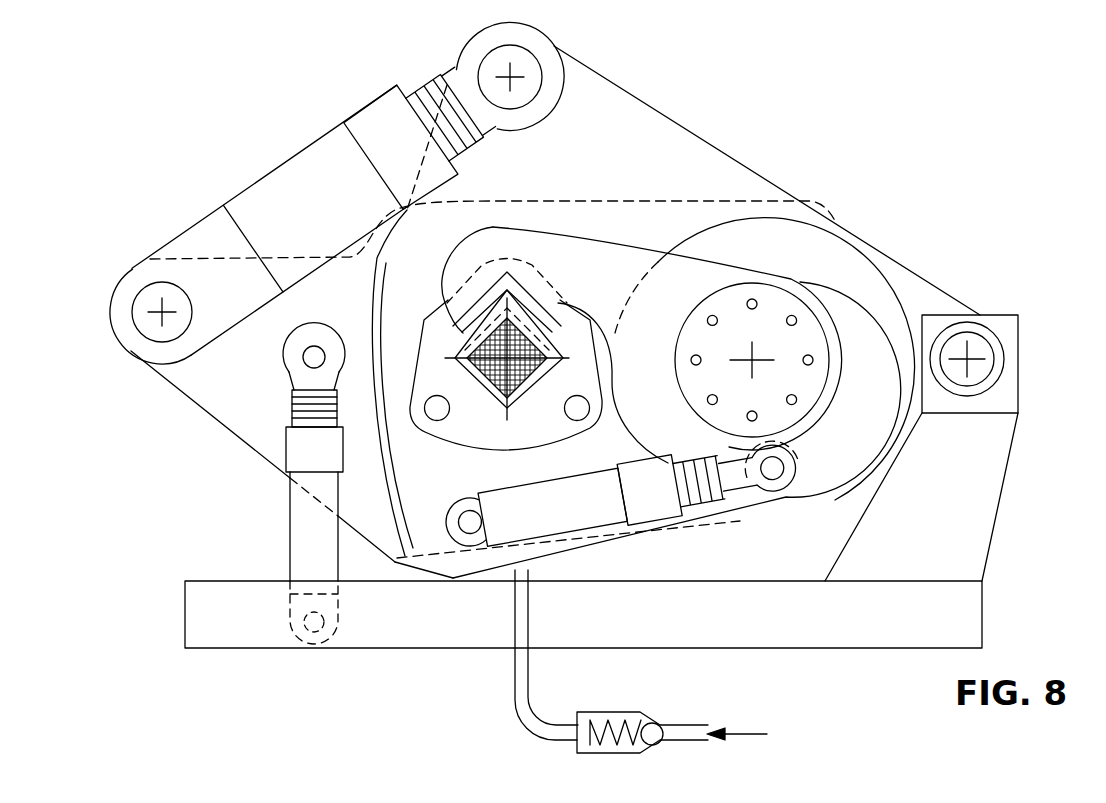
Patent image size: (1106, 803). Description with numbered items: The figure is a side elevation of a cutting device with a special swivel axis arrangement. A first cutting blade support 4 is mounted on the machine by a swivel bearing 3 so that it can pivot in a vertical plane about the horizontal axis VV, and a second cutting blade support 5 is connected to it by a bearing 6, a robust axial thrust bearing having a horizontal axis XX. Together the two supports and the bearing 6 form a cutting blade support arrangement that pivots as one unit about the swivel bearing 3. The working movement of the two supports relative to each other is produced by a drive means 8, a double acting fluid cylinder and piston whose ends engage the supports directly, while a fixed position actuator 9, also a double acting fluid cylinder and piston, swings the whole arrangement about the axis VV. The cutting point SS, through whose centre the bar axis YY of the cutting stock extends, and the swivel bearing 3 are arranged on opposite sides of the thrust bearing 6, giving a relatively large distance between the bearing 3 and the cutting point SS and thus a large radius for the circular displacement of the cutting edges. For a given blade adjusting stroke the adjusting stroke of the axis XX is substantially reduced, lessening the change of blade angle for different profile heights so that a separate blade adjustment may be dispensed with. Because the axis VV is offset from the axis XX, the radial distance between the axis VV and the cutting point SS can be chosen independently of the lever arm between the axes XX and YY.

The swivel bearing 3 is at (993, 350).
The first cutting blade support 4 is at (233, 385).
The second cutting blade support 5 is at (597, 117).
The bearing 6 is at (803, 332).
The drive means 8 is at (292, 193).
The fixed position actuator 9 is at (312, 530).
The horizontal axis of bearing XX is at (753, 357).
The bar axis of cutting stock YY is at (528, 330).
The horizontal swivel axis VV is at (970, 353).
The cutting point SS is at (470, 385).